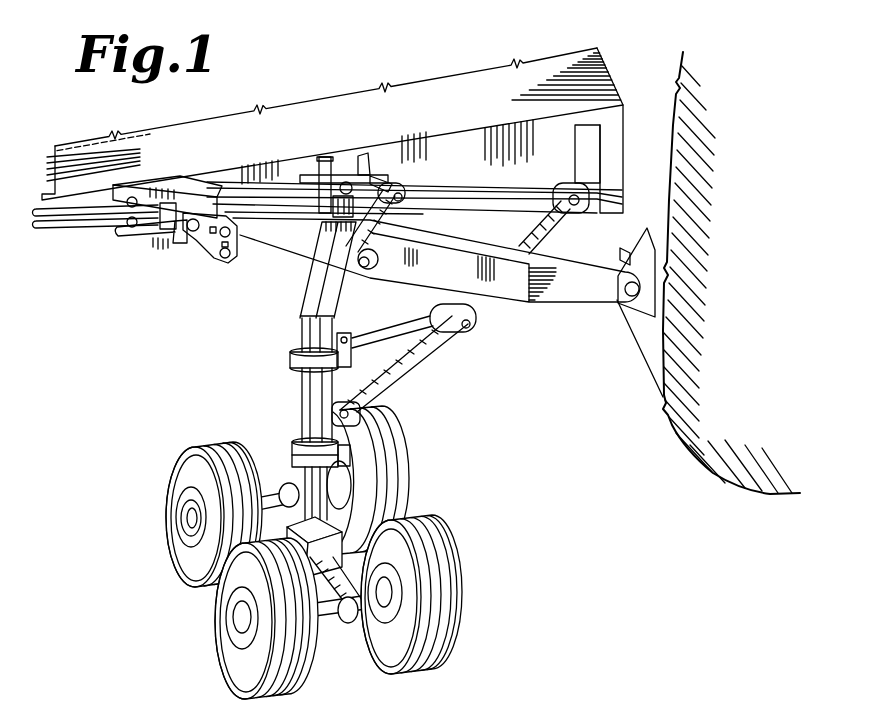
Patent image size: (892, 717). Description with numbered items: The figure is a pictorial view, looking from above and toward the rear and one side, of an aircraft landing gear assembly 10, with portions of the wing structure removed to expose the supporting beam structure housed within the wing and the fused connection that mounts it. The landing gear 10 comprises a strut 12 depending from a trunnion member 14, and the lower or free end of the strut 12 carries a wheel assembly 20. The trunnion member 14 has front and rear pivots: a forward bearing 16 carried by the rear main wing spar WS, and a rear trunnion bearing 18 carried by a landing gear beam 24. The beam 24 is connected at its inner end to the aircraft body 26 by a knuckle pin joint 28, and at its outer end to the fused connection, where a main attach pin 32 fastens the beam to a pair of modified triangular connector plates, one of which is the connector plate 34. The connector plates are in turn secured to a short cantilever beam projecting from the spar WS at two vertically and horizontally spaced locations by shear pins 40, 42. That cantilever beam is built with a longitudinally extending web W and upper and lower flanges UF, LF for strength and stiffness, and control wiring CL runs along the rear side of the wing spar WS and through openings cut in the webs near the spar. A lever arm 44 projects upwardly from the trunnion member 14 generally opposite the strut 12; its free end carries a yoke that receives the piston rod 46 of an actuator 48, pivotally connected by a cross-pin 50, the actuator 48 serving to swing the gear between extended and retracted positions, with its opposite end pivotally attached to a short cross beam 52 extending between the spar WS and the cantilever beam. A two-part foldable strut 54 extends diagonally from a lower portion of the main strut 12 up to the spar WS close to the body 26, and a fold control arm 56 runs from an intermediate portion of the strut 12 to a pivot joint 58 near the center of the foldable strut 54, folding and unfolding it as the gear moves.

The landing gear assembly 10 is at (262, 371).
The strut 12 is at (303, 407).
The trunnion member 14 is at (340, 212).
The forward bearing 16 is at (337, 173).
The rear trunnion bearing 18 is at (352, 268).
The wheel assembly 20 is at (212, 597).
The landing gear beam 24 is at (510, 293).
The aircraft body 26 is at (650, 343).
The knuckle pin joint 28 is at (611, 307).
The main attach pin 32 is at (244, 232).
The connector plate 34 is at (214, 245).
The shear pin 40 is at (193, 233).
The shear pin 42 is at (233, 262).
The lever arm 44 is at (395, 233).
The piston rod 46 is at (366, 173).
The actuator 48 is at (278, 182).
The cross-pin 50 is at (405, 194).
The cross beam 52 is at (200, 175).
The foldable strut 54 is at (420, 373).
The fold control arm 56 is at (372, 333).
The pivot joint 58 is at (468, 336).
The upper flange UF is at (167, 176).
The rear main wing spar WS is at (453, 147).
The control cables CL is at (72, 222).
The lower flange LF is at (128, 234).
The web W is at (170, 228).